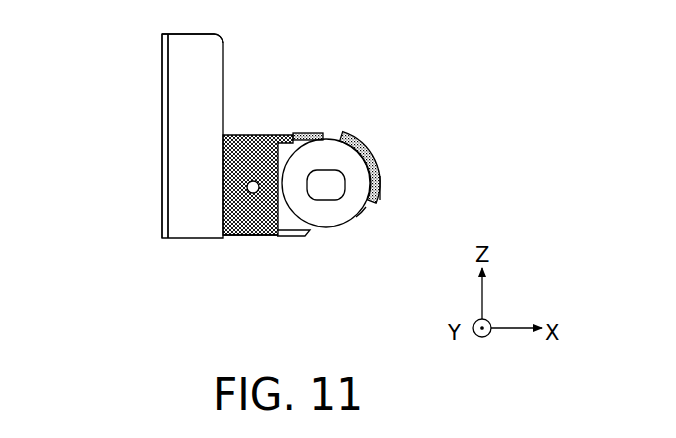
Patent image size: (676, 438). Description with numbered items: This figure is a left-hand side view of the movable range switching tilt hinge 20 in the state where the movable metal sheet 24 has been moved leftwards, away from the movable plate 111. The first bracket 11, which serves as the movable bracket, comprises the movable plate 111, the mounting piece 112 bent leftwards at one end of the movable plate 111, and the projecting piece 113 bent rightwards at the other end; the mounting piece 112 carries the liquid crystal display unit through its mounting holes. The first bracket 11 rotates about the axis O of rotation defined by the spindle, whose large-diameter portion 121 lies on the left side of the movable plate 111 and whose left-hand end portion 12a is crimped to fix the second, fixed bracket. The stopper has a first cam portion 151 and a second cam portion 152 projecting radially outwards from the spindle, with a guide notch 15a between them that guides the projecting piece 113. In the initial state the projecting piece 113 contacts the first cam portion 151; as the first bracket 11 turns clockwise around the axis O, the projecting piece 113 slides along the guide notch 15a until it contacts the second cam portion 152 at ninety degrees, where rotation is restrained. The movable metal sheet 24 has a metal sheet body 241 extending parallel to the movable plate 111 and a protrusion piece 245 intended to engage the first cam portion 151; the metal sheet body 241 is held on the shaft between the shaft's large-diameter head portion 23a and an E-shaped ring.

The movable range switching tilt hinge 20 is at (427, 83).
The first bracket 11 is at (177, 168).
The movable plate 111 is at (218, 41).
The mounting piece 112 is at (162, 114).
The movable metal sheet 24 is at (250, 133).
The protrusion piece 245 is at (301, 133).
The large-diameter portion (head portion) of the shaft 23a is at (259, 236).
The metal sheet body 241 is at (234, 236).
The large-diameter portion of the spindle 121 is at (322, 153).
The left-hand end portion of the spindle 12a is at (321, 189).
The axis of rotation O is at (326, 183).
The first cam portion 151 is at (350, 133).
The projecting piece 113 is at (380, 182).
The guide notch 15a is at (360, 211).
The second cam portion 152 is at (300, 232).